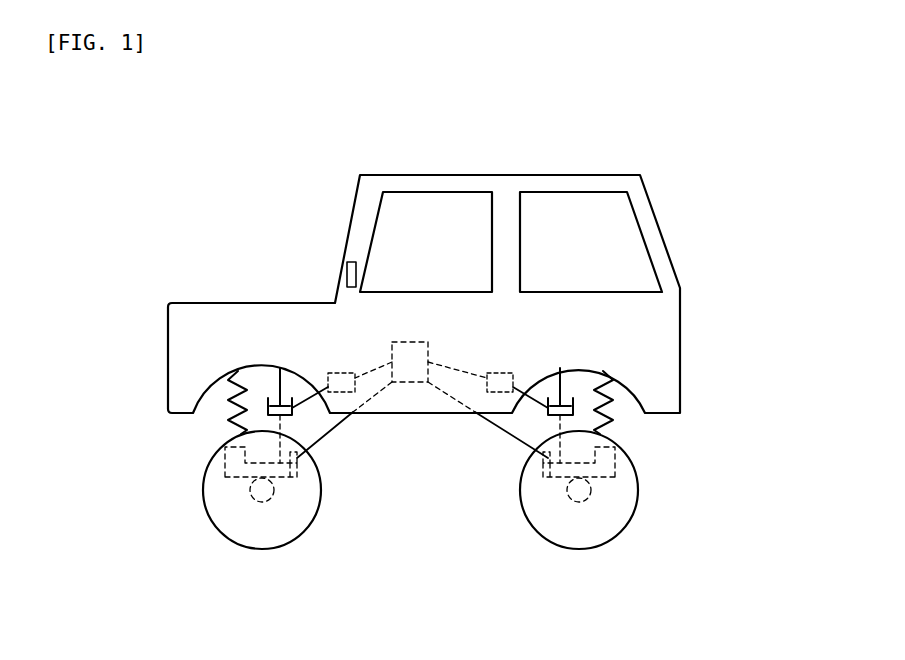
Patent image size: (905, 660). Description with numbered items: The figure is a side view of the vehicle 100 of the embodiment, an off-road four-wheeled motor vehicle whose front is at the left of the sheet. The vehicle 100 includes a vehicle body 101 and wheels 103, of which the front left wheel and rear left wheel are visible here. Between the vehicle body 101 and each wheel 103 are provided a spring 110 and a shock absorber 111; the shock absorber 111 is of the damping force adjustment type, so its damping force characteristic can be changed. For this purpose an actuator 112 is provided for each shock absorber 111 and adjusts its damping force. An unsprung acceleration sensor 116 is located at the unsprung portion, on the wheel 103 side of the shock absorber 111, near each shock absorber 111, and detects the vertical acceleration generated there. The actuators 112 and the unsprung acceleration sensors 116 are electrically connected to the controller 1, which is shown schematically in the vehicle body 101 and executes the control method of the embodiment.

The vehicle 100 is at (548, 139).
The controller 1 is at (404, 342).
The vehicle body 101 is at (363, 222).
The wheels 103 is at (226, 530).
The spring 110 is at (230, 380).
The shock absorber 111 is at (294, 412).
The actuator 112 is at (330, 376).
The unsprung acceleration sensor 116 is at (300, 468).